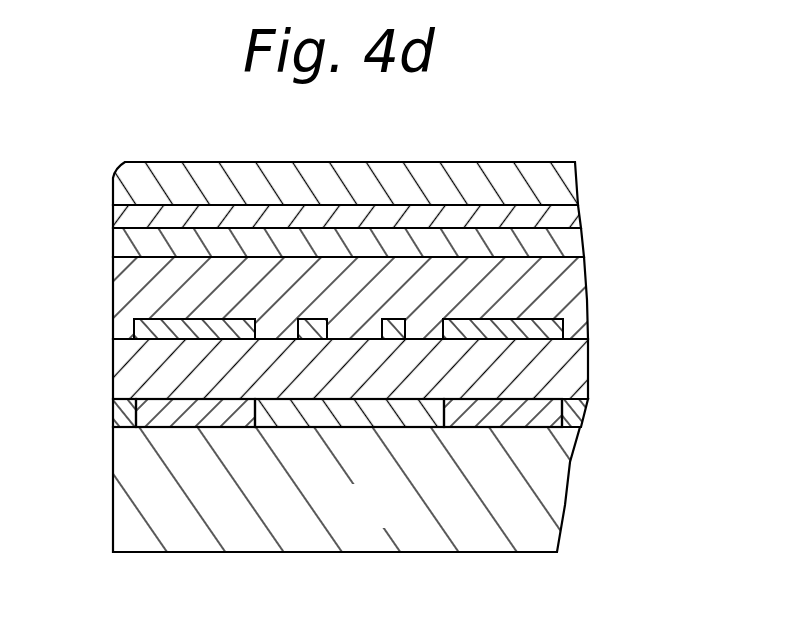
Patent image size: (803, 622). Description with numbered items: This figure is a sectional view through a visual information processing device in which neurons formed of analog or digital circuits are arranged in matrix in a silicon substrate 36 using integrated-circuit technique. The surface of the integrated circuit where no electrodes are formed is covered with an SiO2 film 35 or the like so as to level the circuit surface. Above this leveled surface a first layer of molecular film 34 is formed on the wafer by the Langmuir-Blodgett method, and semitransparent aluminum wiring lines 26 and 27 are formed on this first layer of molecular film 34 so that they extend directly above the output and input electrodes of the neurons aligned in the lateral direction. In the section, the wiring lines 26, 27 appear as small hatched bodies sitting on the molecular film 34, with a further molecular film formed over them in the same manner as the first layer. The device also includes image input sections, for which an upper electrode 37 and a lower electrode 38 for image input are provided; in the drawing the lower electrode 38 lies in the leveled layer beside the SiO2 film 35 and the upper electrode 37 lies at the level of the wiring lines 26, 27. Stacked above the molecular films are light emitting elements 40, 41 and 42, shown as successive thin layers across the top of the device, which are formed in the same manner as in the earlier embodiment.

The semitransparent aluminum wiring line 26 is at (320, 319).
The semitransparent aluminum wiring line 27 is at (402, 319).
The first layer of molecular film 34 is at (125, 285).
The SiO2 film 35 is at (353, 418).
The silicon substrate 36 is at (525, 522).
The upper electrode for image input 37 is at (130, 323).
The lower electrode for image input 38 is at (155, 422).
The light emitting element 40 is at (580, 247).
The light emitting element 41 is at (583, 218).
The light emitting element 42 is at (577, 183).